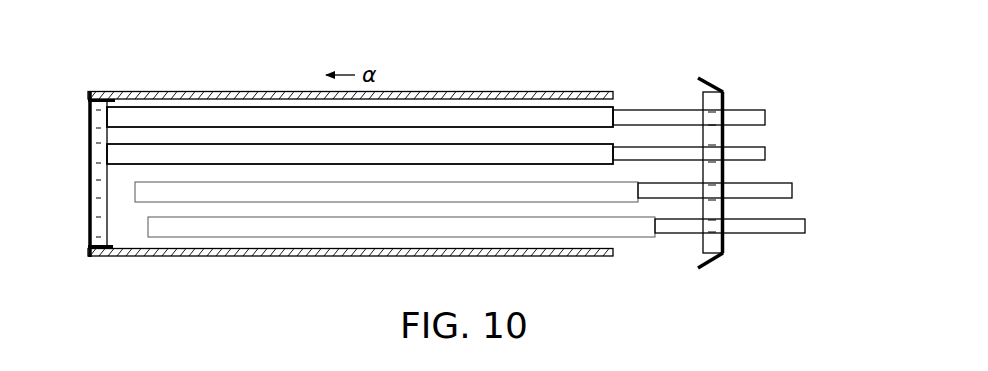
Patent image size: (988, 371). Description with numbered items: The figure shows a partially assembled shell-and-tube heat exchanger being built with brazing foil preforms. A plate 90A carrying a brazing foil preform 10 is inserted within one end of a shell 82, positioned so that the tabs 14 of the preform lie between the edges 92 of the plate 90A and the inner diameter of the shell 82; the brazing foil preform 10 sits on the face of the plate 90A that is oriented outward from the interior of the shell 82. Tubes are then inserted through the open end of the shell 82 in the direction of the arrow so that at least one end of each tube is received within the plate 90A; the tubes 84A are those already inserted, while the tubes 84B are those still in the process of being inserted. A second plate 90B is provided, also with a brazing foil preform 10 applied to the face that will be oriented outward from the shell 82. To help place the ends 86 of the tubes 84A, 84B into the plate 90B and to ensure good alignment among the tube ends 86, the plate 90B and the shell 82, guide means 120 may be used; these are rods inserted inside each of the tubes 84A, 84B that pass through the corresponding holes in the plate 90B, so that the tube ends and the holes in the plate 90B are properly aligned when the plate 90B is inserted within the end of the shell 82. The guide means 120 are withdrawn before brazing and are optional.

The brazing foil preform 10 is at (83, 203).
The tabs 14 is at (103, 91).
The shell 82 is at (189, 81).
The tubes (already inserted) 84A is at (464, 156).
The tubes (being inserted) 84B is at (547, 198).
The ends of the tubes 86 is at (94, 155).
The plate 90A is at (82, 139).
The second plate 90B is at (699, 88).
The edges of the plates 92 is at (95, 257).
The guide means 120 is at (813, 212).